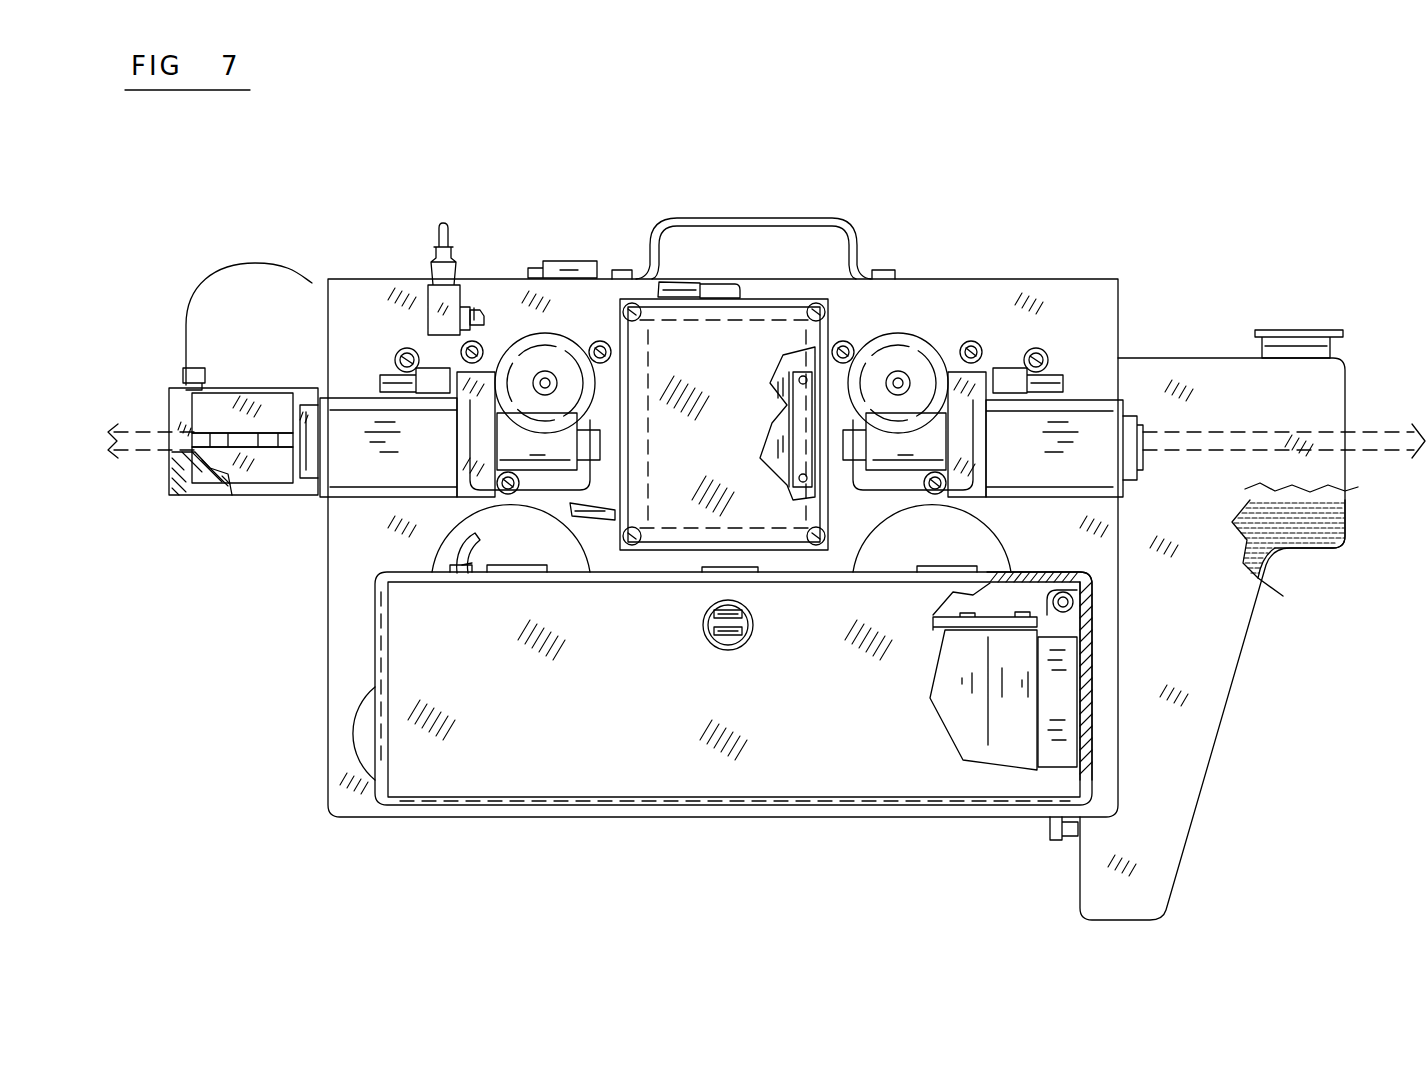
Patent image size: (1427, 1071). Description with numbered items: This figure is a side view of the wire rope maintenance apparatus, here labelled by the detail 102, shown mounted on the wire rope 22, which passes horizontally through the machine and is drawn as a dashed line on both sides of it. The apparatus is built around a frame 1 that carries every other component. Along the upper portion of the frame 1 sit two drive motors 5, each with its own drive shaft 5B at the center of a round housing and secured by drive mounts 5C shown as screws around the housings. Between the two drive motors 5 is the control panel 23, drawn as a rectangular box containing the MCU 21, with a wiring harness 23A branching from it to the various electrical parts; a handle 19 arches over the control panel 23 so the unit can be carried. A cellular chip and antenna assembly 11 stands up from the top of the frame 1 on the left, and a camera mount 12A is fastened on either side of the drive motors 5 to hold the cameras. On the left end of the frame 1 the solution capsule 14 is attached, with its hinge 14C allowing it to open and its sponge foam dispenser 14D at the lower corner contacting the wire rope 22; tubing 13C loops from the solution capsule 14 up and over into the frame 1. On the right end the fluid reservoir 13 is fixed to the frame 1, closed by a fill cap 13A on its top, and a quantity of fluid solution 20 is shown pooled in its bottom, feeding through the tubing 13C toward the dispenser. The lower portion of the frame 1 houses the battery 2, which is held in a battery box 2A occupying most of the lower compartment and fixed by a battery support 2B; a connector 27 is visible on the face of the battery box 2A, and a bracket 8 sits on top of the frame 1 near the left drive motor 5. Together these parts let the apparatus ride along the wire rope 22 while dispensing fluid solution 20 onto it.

The frame 1 is at (336, 746).
The battery 2 is at (983, 752).
The battery box 2A is at (531, 590).
The battery support 2B is at (1072, 604).
The drive motor 5 is at (541, 358).
The drive shaft 5B is at (549, 378).
The drive mount 5C is at (479, 344).
The bracket 8 is at (568, 261).
The cellular chip and antenna assembly 11 is at (433, 274).
The camera mount 12A is at (396, 348).
The fluid reservoir 13 is at (1191, 735).
The fill cap 13A is at (1287, 334).
The tubing 13C is at (215, 292).
The solution capsule 14 is at (262, 500).
The hinge 14C is at (262, 405).
The sponge foam dispenser 14D is at (197, 496).
The handle 19 is at (751, 218).
The fluid solution 20 is at (1291, 540).
The MCU 21 is at (787, 412).
The wire rope 22 is at (1372, 438).
The control panel 23 is at (779, 307).
The wiring harness 23A is at (479, 306).
The power connector 27 is at (750, 645).
The detail 102 is at (432, 220).